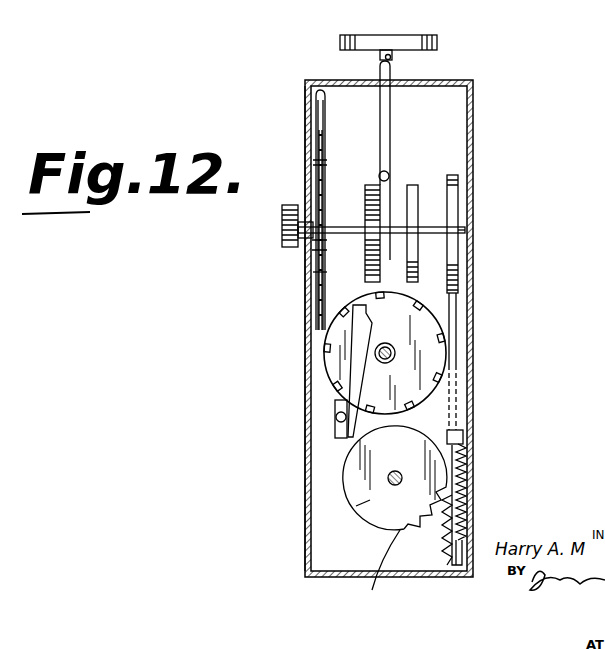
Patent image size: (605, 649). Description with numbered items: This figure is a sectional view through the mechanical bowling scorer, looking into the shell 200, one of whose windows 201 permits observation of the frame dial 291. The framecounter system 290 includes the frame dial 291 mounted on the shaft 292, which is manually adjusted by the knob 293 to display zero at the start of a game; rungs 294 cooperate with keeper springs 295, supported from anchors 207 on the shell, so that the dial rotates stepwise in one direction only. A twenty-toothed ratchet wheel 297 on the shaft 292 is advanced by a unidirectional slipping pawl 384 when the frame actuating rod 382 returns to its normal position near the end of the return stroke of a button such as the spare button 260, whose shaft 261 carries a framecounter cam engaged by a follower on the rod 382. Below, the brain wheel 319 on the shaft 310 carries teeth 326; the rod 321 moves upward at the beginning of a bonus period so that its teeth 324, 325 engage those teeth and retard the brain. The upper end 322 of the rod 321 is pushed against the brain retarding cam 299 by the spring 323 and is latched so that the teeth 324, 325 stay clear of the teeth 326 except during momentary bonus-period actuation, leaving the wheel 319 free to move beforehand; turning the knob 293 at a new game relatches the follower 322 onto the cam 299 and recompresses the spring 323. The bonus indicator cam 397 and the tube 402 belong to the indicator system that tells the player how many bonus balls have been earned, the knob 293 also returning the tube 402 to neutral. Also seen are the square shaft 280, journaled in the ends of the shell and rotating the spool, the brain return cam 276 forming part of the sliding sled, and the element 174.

The shell 200 is at (478, 110).
The window 201 is at (308, 300).
The anchor 207 is at (314, 100).
The spare button 260 is at (437, 41).
The shaft 261 is at (392, 62).
The frame actuating rod 382 is at (389, 176).
The unidirectional slipping pawl 384 is at (366, 183).
The bonus indicator cam 397 is at (412, 186).
The tube 402 is at (432, 222).
The brain retarding cam 299 is at (460, 277).
The upper end (follower) of rod 322 is at (463, 285).
The shaft 292 is at (447, 230).
The knob 293 is at (282, 246).
The keeper spring 295 is at (314, 118).
The frame dial 291 is at (316, 130).
The rung 294 is at (312, 165).
The framecounter system 290 is at (300, 188).
The ratchet wheel 297 is at (318, 271).
The ratchet wheel 174 is at (446, 357).
The square shaft 280 is at (376, 358).
The brain return cam 276 is at (335, 425).
The shaft 310 is at (388, 480).
The ratchet wheel (brain wheel) 319 is at (370, 505).
The teeth 326 is at (372, 580).
The rod 321 is at (456, 316).
The spring 323 is at (467, 456).
The teeth 324 is at (447, 521).
The teeth 325 is at (449, 558).